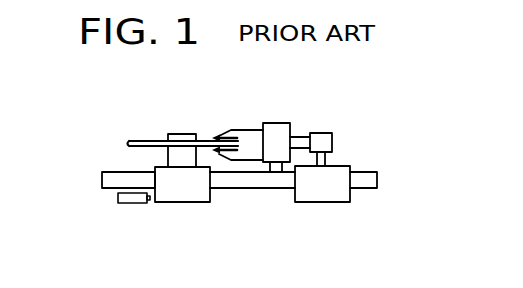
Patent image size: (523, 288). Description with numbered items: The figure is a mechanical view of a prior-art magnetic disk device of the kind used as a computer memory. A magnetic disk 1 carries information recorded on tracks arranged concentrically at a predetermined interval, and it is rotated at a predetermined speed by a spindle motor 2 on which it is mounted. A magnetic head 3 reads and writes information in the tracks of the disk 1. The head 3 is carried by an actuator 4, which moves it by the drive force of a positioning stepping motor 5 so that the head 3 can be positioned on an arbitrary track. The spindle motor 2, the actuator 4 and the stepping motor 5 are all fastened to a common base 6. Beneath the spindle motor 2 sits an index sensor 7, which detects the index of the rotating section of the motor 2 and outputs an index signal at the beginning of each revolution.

The magnetic disk 1 is at (146, 140).
The spindle motor 2 is at (186, 188).
The magnetic head 3 is at (249, 130).
The actuator 4 is at (280, 131).
The positioning stepping motor 5 is at (328, 191).
The base 6 is at (370, 181).
The index sensor 7 is at (135, 204).